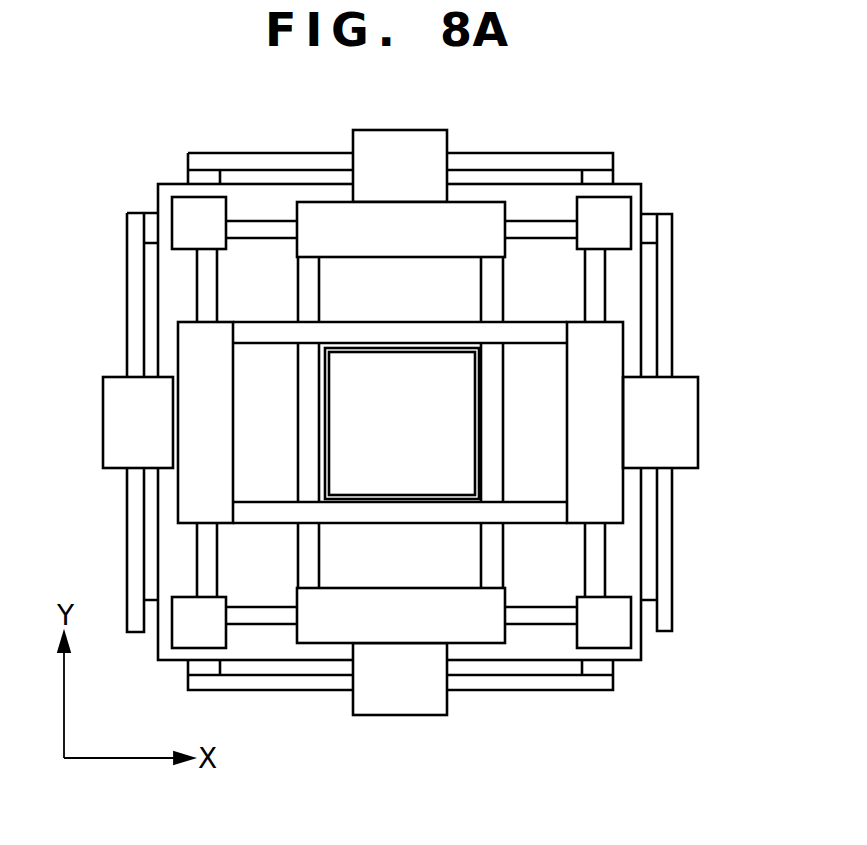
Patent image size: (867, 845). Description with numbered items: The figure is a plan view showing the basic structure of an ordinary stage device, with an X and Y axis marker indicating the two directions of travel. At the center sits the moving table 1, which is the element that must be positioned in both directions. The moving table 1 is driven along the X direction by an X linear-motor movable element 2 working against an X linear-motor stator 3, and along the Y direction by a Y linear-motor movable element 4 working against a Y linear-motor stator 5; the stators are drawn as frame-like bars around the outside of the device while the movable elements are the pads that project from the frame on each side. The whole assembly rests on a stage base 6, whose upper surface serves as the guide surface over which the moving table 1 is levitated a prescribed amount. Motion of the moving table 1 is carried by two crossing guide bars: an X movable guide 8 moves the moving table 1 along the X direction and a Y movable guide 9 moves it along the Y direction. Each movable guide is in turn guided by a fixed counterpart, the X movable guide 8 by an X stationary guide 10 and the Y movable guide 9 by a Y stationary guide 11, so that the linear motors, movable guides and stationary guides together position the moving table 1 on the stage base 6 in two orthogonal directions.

The moving table 1 is at (344, 442).
The X linear-motor movable element 2 is at (413, 147).
The X linear-motor stator 3 is at (238, 158).
The Y linear-motor movable element 4 is at (673, 422).
The Y linear-motor stator 5 is at (665, 297).
The stage base 6 is at (263, 588).
The X movable guide 8 is at (493, 555).
The Y movable guide 9 is at (531, 333).
The X stationary guide 10 is at (538, 230).
The Y stationary guide 11 is at (597, 562).